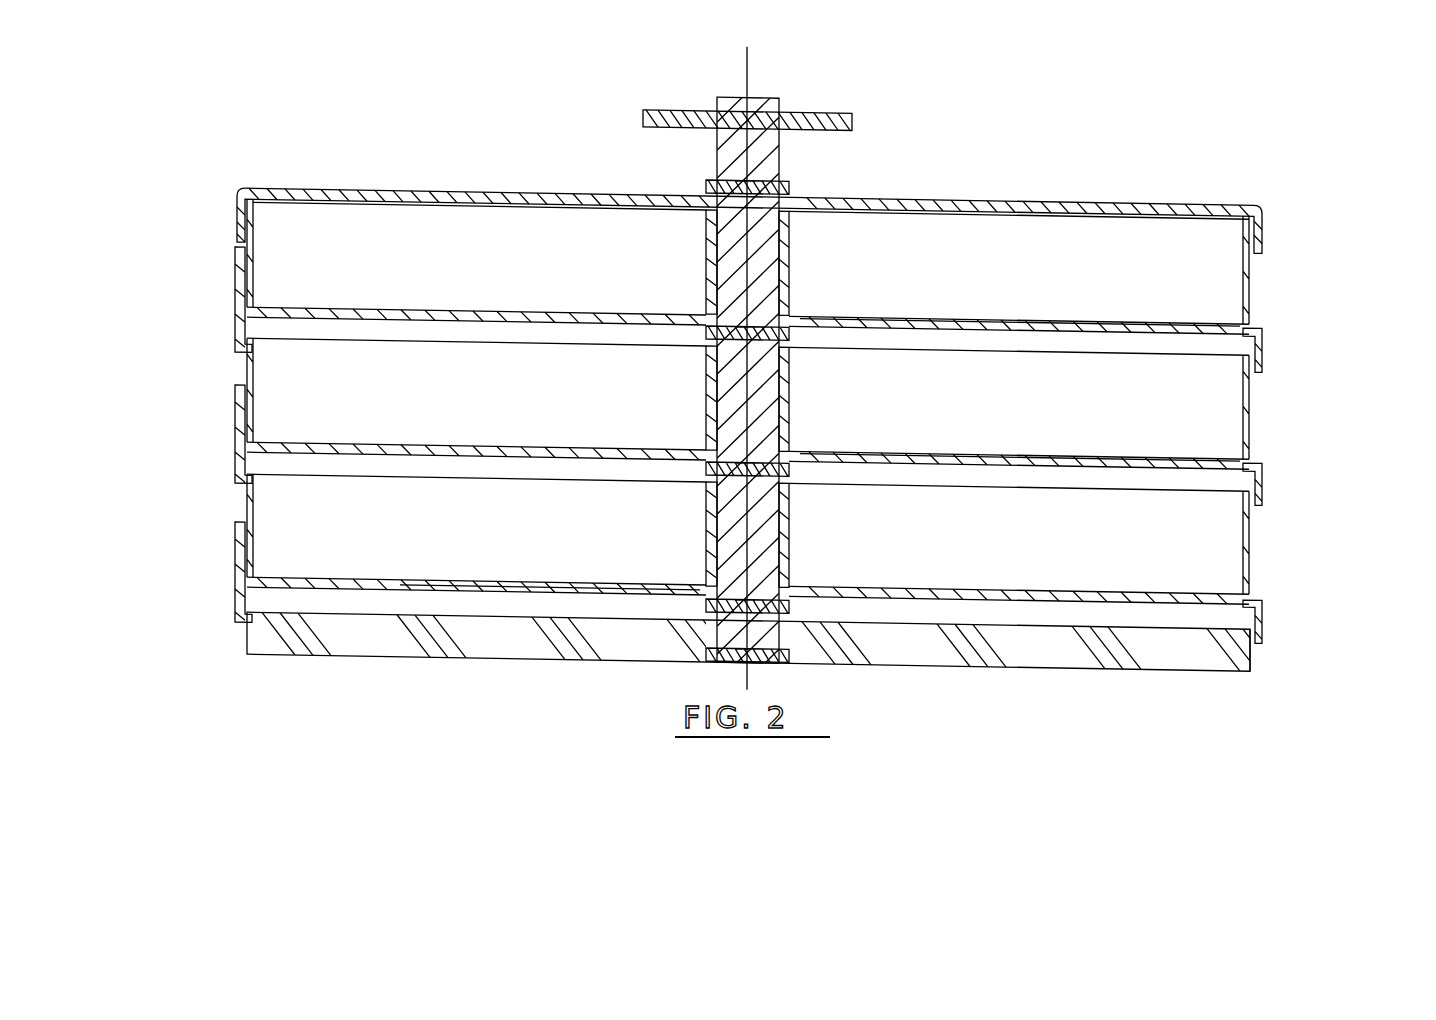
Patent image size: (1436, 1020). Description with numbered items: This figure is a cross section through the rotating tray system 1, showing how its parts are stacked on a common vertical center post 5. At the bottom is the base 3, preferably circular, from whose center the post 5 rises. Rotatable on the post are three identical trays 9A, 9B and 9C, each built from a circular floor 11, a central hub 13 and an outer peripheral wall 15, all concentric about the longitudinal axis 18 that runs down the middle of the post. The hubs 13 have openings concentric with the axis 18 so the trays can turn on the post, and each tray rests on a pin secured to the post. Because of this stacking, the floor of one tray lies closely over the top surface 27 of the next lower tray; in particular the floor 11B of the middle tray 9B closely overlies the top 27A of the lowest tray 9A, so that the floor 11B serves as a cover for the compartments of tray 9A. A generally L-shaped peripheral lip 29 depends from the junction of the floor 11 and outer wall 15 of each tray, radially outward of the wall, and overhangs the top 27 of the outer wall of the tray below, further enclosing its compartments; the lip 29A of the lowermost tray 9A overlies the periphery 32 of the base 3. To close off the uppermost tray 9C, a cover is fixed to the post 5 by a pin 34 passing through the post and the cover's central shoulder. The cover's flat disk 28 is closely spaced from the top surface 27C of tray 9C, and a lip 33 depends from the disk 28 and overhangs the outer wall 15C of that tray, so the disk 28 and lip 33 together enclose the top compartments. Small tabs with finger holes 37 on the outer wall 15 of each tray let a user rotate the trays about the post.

The rotating tray system 1 is at (1073, 140).
The base 3 is at (893, 650).
The center post 5 is at (717, 167).
The tray 9A is at (1256, 546).
The tray 9B is at (244, 373).
The tray 9C is at (241, 236).
The circular floor 11 is at (857, 318).
The floor 11B is at (975, 458).
The central hub 13 is at (705, 292).
The outer peripheral wall 15 is at (1250, 408).
The outer wall 15C is at (1247, 270).
The longitudinal axis 18 is at (750, 63).
The top surface 27 is at (982, 352).
The top 27A is at (1198, 493).
The top surface 27C is at (322, 205).
The flat disk 28 is at (442, 200).
The peripheral L-shaped lip 29 is at (1262, 360).
The lip 29A is at (1262, 620).
The periphery 32 is at (1248, 667).
The lip 33 is at (237, 215).
The pin 34 is at (793, 173).
The finger holes 37 is at (240, 288).